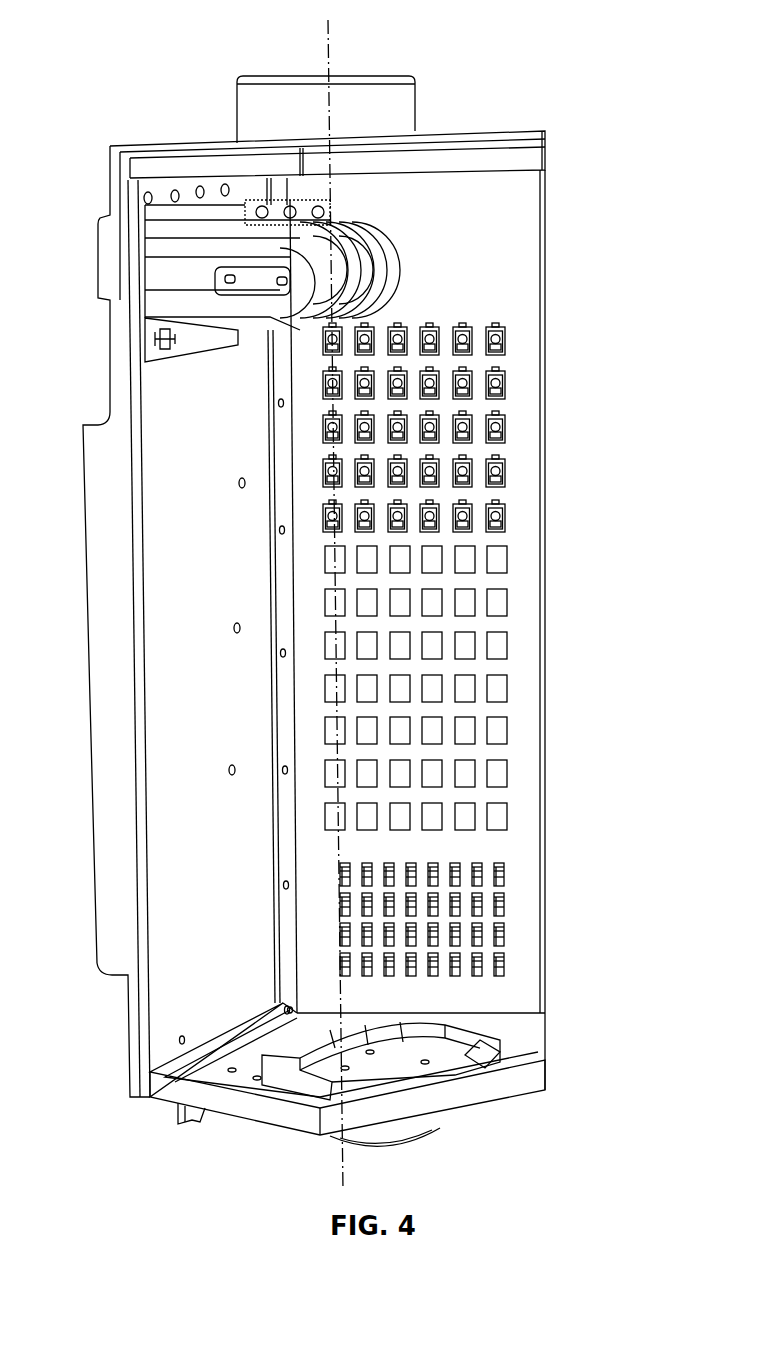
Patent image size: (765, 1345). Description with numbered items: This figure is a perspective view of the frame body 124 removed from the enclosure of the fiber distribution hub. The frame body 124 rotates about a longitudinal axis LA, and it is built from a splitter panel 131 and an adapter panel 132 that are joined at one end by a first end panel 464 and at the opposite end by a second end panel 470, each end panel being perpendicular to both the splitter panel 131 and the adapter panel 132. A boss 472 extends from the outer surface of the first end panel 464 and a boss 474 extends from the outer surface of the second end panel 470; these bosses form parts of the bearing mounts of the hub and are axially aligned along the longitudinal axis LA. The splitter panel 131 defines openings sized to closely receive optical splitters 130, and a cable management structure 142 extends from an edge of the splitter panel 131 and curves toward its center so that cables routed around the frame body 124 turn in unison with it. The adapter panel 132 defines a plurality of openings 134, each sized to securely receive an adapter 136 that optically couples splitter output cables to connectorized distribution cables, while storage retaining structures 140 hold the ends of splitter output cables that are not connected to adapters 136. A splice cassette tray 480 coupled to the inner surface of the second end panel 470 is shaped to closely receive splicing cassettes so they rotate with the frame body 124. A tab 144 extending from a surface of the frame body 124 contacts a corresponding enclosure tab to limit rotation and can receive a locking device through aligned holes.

The frame body 124 is at (126, 48).
The longitudinal axis LA is at (328, 42).
The boss 472 is at (348, 100).
The first end panel 464 is at (455, 160).
The optical splitter 130 is at (155, 275).
The splitter panel 131 is at (185, 505).
The cable management structure 142 is at (105, 578).
The adapter 136 is at (490, 385).
The opening 134 is at (465, 648).
The adapter panel 132 is at (530, 732).
The storage retaining structure 140 is at (455, 878).
The splice cassette tray 480 is at (460, 1048).
The second end panel 470 is at (285, 1112).
The boss 474 is at (385, 1128).
The tab 144 is at (205, 1115).